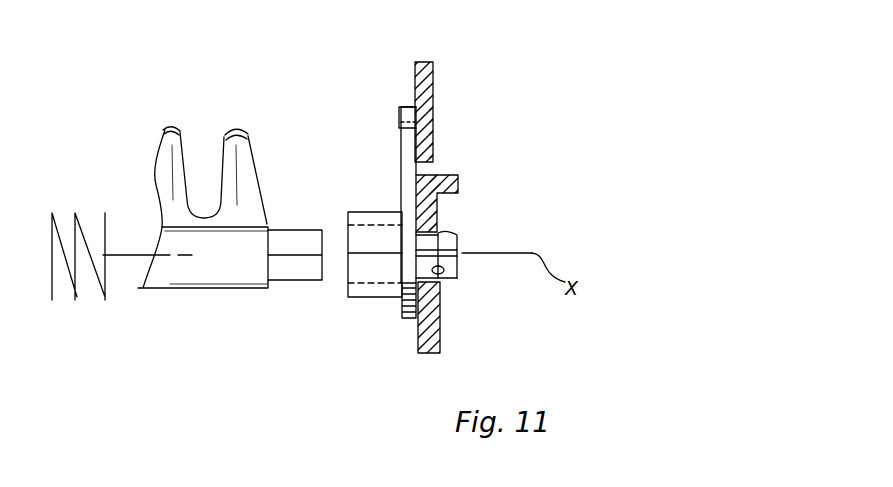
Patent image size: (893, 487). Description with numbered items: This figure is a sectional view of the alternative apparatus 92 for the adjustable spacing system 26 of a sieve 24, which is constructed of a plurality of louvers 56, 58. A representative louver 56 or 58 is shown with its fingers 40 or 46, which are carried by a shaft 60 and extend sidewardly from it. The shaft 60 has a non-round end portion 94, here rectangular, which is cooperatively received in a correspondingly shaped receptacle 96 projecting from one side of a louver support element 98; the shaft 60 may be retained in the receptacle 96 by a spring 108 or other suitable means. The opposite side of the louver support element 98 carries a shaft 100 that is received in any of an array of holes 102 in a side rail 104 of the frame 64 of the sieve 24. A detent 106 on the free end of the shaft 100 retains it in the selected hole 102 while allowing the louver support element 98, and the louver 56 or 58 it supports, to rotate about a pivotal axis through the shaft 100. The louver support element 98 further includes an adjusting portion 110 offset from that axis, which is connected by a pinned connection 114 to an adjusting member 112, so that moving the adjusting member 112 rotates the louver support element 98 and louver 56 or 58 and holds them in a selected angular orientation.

The spring 108 is at (60, 222).
The fingers 40 is at (211, 136).
The fingers 46 is at (232, 128).
The louver 56 is at (186, 290).
The louver 58 is at (146, 289).
The shaft 60 is at (240, 289).
The non-round shaped end portion 94 is at (303, 283).
The alternative apparatus 92 is at (350, 216).
The receptacle 96 is at (367, 212).
The louver support element 98 is at (408, 320).
The adjusting portion 110 is at (369, 192).
The pinned connection 114 is at (397, 118).
The adjusting member 112 is at (433, 76).
The adjustable spacing system 26 is at (498, 206).
The sieve 24 is at (480, 222).
The frame 64 is at (465, 170).
The shaft 100 is at (450, 231).
The detent 106 is at (456, 242).
The holes 102 is at (447, 271).
The side rail 104 is at (468, 222).